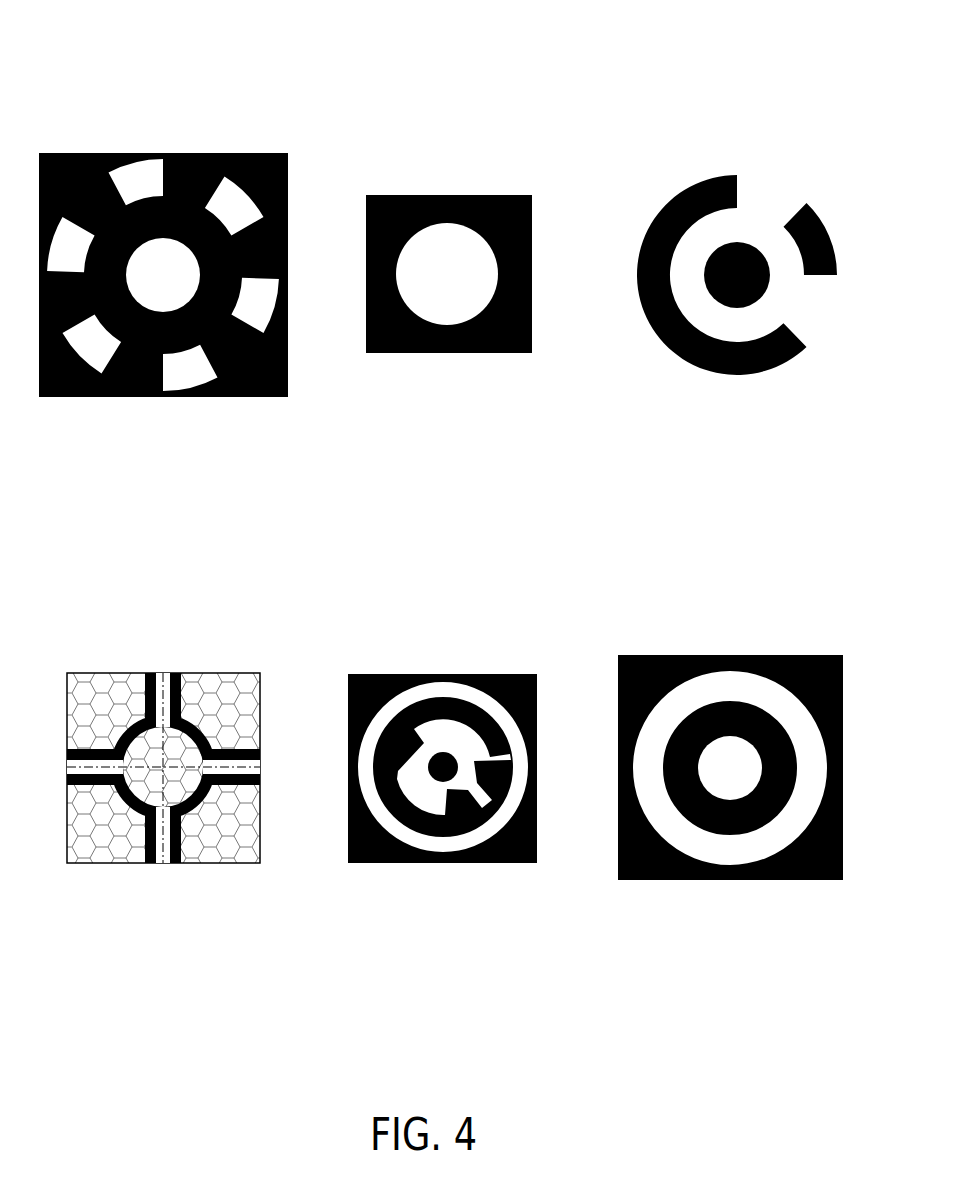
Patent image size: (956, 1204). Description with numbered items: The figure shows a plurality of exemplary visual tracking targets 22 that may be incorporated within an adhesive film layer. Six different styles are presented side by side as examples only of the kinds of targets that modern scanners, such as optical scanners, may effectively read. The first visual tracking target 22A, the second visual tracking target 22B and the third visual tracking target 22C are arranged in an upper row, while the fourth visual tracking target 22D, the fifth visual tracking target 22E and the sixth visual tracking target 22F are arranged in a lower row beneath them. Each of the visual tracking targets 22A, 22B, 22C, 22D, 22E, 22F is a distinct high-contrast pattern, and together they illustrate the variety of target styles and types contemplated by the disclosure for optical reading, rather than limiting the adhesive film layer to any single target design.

The visual tracking targets 22 is at (631, 93).
The visual tracking target 22A is at (163, 317).
The visual tracking target 22B is at (449, 338).
The visual tracking target 22C is at (737, 328).
The visual tracking target 22D is at (163, 819).
The visual tracking target 22E is at (442, 820).
The visual tracking target 22F is at (730, 810).